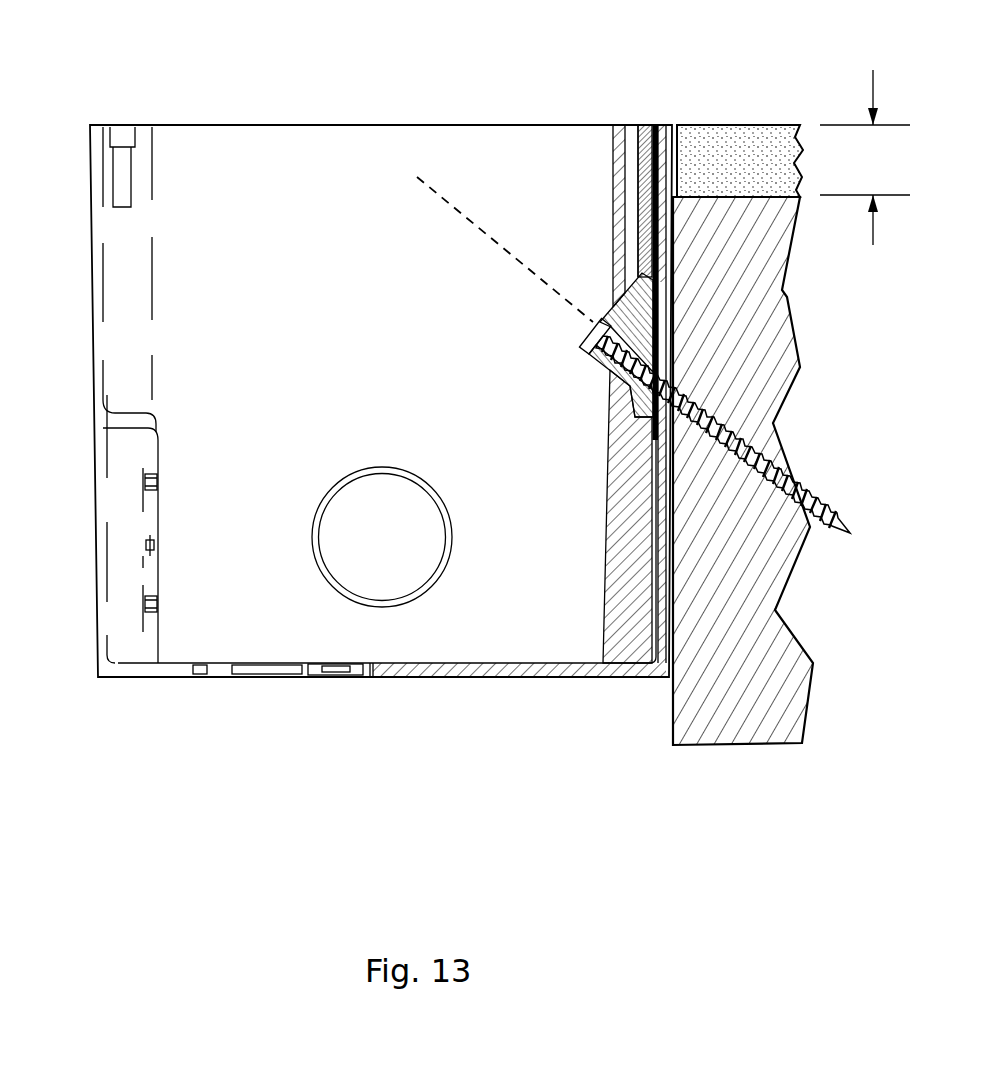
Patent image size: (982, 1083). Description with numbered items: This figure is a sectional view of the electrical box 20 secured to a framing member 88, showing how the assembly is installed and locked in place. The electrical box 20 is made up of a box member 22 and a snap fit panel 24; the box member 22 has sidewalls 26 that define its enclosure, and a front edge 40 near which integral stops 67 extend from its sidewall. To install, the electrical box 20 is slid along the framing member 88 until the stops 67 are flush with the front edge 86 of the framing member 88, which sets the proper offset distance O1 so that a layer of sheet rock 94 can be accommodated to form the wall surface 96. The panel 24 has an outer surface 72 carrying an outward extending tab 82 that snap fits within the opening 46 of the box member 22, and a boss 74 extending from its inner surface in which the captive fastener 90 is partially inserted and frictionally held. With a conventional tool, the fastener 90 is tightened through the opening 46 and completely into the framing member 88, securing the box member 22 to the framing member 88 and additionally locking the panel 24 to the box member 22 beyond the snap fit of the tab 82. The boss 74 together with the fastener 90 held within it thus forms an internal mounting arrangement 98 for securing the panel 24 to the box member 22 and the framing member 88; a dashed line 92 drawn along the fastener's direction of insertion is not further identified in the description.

The electrical box 20 is at (236, 736).
The box member 22 is at (92, 640).
The snap fit panel 24 is at (640, 177).
The sidewalls 26 is at (258, 338).
The front edge 40 is at (271, 125).
The opening 46 is at (663, 337).
The integral stops 67 is at (673, 125).
The outer surface 72 is at (634, 246).
The boss 74 is at (594, 352).
The outward extending tab 82 is at (660, 302).
The front edge 86 is at (738, 198).
The framing member 88 is at (757, 275).
The captive fastener 90 is at (690, 420).
The screw axis 92 is at (440, 192).
The sheet rock 94 is at (778, 168).
The wall surface 96 is at (740, 114).
The internal mounting arrangement 98 is at (565, 332).
The offset distance O1 is at (865, 177).